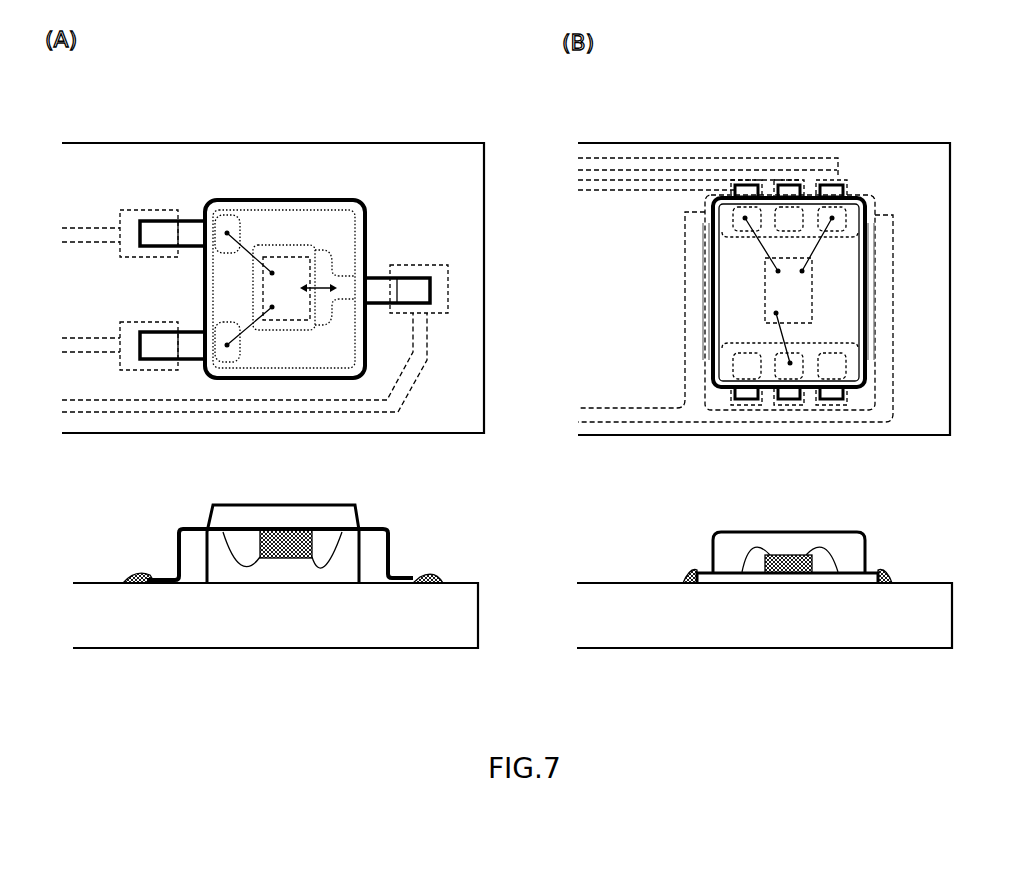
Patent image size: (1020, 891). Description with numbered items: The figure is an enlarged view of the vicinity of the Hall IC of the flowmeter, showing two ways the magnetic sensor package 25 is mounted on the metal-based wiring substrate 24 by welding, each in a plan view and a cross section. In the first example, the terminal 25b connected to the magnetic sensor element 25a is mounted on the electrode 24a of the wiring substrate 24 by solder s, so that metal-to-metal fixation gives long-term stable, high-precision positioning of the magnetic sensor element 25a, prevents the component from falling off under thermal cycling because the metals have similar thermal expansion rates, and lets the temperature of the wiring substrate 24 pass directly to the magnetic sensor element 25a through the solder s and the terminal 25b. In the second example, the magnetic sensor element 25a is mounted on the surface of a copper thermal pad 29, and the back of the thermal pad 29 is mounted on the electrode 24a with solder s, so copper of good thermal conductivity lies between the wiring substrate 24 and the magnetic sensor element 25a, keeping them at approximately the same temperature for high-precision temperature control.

The metal-based wiring substrate 24 is at (147, 143).
The electrode 24a is at (438, 310).
The magnetic sensor package 25 is at (368, 203).
The magnetic sensor element 25a is at (288, 257).
The terminal 25b is at (410, 276).
The thermal pad 29 is at (869, 293).
The solder s is at (437, 578).